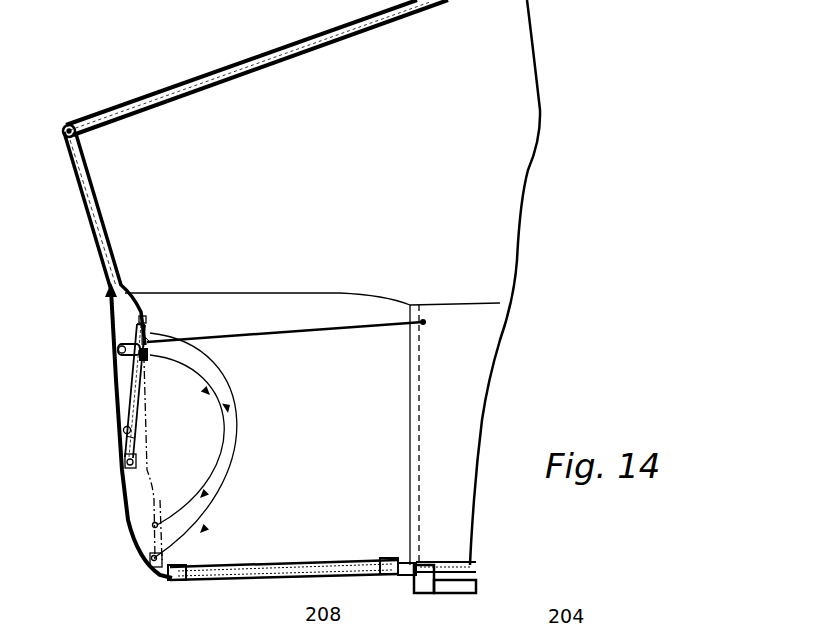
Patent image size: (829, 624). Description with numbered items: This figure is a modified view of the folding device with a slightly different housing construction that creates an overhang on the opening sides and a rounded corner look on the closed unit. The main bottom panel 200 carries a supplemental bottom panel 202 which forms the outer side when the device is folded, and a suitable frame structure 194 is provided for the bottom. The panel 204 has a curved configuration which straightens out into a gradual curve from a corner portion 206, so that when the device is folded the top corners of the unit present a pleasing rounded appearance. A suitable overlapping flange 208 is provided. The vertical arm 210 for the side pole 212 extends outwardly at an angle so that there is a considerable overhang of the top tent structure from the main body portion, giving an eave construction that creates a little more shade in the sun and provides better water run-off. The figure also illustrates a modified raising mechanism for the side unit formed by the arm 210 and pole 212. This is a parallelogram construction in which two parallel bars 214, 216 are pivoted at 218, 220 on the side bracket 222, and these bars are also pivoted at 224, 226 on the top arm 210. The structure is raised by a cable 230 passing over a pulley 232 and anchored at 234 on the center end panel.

The frame structure 194 is at (437, 586).
The main bottom panel 200 is at (468, 564).
The supplemental bottom panel 202 is at (284, 566).
The panel 204 is at (123, 488).
The corner portion 206 is at (151, 569).
The overlapping flange 208 is at (108, 294).
The vertical arm 210 is at (96, 188).
The side pole 212 is at (80, 128).
The parallel bar 214 is at (128, 375).
The parallel bar 216 is at (139, 388).
The pivot 218 is at (123, 429).
The pivot 220 is at (126, 456).
The side bracket 222 is at (126, 440).
The pivot 224 is at (143, 320).
The pivot 226 is at (150, 340).
The cable 230 is at (319, 334).
The pulley 232 is at (117, 349).
The anchor 234 is at (424, 322).